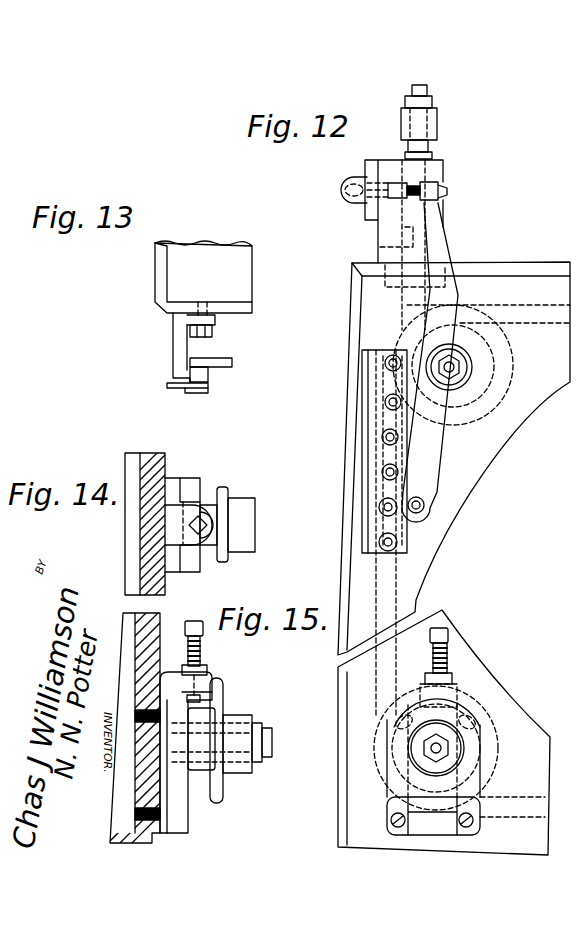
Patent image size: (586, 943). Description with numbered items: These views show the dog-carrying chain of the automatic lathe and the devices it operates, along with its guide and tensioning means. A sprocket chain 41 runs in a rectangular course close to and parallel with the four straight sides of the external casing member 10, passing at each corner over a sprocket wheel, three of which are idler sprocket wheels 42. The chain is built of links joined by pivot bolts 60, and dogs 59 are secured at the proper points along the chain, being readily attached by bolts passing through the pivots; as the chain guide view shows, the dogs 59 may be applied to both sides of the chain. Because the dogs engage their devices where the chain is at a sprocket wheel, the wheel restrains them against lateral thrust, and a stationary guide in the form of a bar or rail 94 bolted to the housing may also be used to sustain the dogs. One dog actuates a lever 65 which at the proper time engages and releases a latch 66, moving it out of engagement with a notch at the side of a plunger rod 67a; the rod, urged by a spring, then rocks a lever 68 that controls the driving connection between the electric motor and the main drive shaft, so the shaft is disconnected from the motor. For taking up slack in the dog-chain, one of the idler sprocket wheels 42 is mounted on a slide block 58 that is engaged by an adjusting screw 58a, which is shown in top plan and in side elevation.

In FIG. 12, the external casing member 10 is at (527, 274).
In FIG. 13, the external casing member 10 is at (203, 277).
In FIG. 14, the external casing member 10 is at (153, 532).
In FIG. 15, the external casing member 10 is at (137, 717).
In FIG. 12, the sprocket chain 41 is at (548, 314).
In FIG. 13, the sprocket chain 41 is at (210, 374).
In FIG. 12, the idler sprocket wheel 42 is at (511, 380).
In FIG. 14, the idler sprocket wheel 42 is at (223, 536).
In FIG. 15, the idler sprocket wheel 42 is at (225, 707).
In FIG. 12, the slide block 58 is at (392, 795).
In FIG. 14, the slide block 58 is at (188, 572).
In FIG. 15, the slide block 58 is at (188, 797).
In FIG. 12, the adjusting screw 58a is at (501, 639).
In FIG. 14, the adjusting screw 58a is at (204, 505).
In FIG. 15, the adjusting screw 58a is at (203, 653).
In FIG. 12, the dog 59 is at (385, 378).
In FIG. 13, the dog 59 is at (228, 358).
In FIG. 12, the pivot bolt 60 is at (393, 356).
In FIG. 12, the lever 65 is at (433, 460).
In FIG. 12, the latch 66 is at (397, 190).
In FIG. 12, the plunger rod 67a is at (440, 158).
In FIG. 12, the lever 68 is at (440, 128).
In FIG. 12, the guide bar 94 is at (366, 400).
In FIG. 13, the guide bar 94 is at (173, 355).